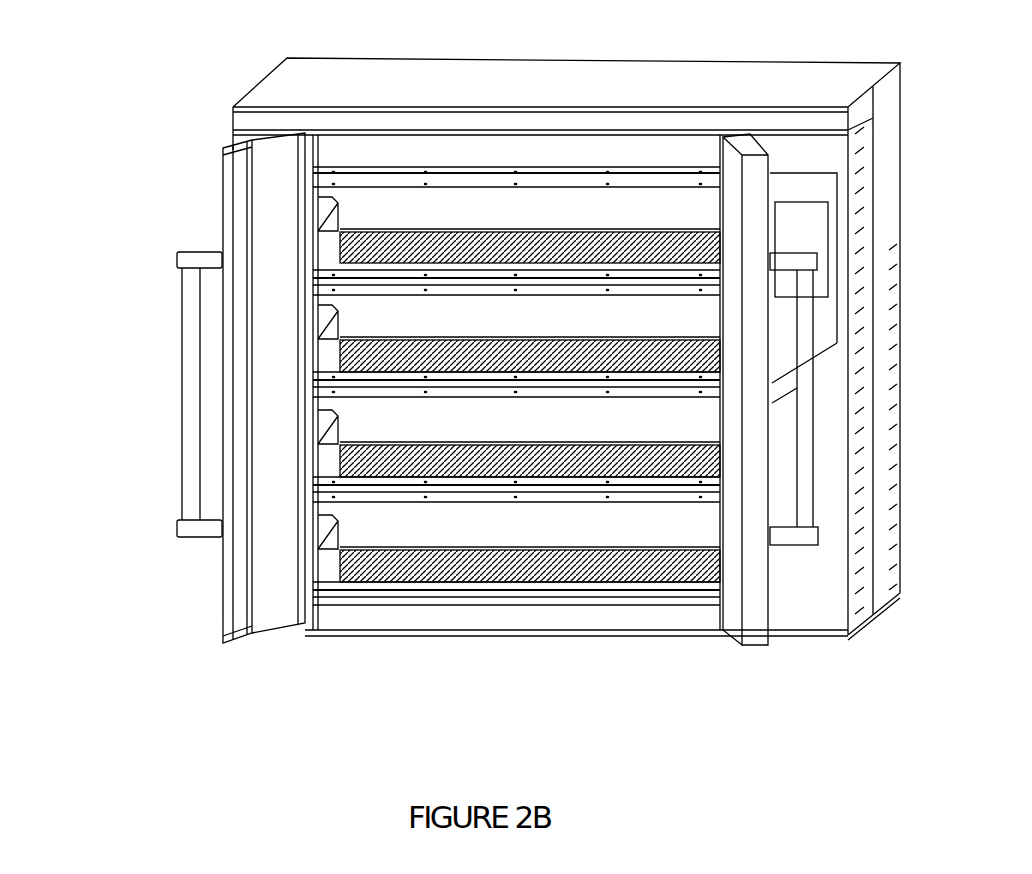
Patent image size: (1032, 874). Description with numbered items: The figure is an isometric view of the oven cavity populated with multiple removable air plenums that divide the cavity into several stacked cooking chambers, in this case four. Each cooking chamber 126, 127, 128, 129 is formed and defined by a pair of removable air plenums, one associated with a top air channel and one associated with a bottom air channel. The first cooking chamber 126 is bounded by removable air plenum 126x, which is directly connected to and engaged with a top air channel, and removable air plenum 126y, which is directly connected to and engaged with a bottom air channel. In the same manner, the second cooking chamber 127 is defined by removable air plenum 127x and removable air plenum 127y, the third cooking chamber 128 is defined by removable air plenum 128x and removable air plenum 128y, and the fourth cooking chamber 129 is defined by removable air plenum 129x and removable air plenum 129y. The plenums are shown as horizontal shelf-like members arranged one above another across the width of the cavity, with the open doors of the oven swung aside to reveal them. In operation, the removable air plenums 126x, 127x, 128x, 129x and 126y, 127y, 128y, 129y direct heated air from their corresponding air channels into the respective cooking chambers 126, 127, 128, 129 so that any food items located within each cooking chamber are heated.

The cooking chamber 126 is at (476, 368).
The removable air plenum 126x is at (656, 181).
The removable air plenum 126y is at (372, 270).
The cooking chamber 127 is at (381, 500).
The removable air plenum 127x is at (343, 281).
The removable air plenum 127y is at (350, 370).
The cooking chamber 128 is at (392, 538).
The removable air plenum 128x is at (363, 387).
The removable air plenum 128y is at (377, 475).
The cooking chamber 129 is at (396, 624).
The removable air plenum 129x is at (363, 488).
The removable air plenum 129y is at (357, 580).